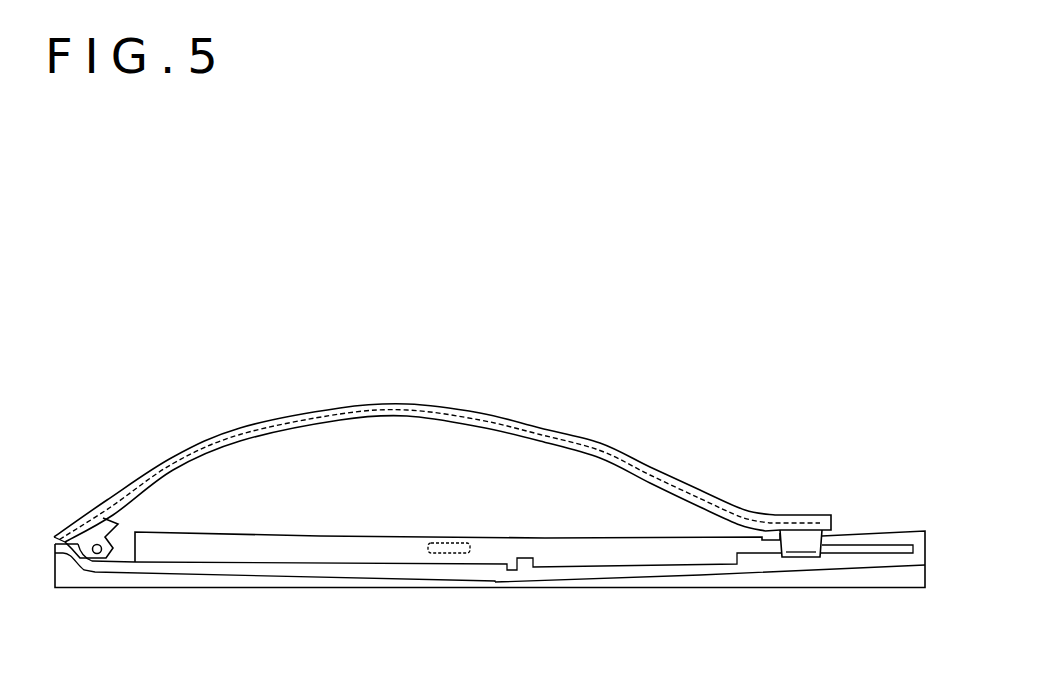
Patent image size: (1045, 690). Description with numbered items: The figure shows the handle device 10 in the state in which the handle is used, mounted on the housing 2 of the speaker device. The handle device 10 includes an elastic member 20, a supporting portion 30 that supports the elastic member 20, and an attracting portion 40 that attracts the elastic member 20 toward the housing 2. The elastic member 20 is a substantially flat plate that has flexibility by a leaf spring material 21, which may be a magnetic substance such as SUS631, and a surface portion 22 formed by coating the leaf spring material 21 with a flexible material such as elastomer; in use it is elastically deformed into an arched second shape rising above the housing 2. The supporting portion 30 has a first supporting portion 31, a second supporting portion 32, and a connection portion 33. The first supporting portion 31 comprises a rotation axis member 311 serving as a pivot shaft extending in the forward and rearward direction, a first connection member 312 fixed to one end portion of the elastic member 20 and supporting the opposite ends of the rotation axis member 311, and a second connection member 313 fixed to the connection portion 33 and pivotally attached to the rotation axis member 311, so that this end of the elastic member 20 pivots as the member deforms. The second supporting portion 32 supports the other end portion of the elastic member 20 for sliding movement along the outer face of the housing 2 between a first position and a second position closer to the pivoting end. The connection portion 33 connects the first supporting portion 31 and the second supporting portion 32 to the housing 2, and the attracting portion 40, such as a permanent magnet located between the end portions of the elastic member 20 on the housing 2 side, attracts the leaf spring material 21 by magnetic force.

The handle device 10 is at (97, 377).
The housing 2 is at (265, 580).
The elastic member 20 is at (196, 434).
The leaf spring material 21 is at (278, 427).
The surface portion 22 is at (338, 414).
The supporting portion 30 is at (619, 534).
The first supporting portion 31 is at (170, 505).
The rotation axis member 311 is at (73, 562).
The first connection member 312 is at (104, 529).
The second connection member 313 is at (112, 553).
The second supporting portion 32 is at (846, 535).
The connection portion 33 is at (681, 575).
The attracting portion 40 is at (452, 554).